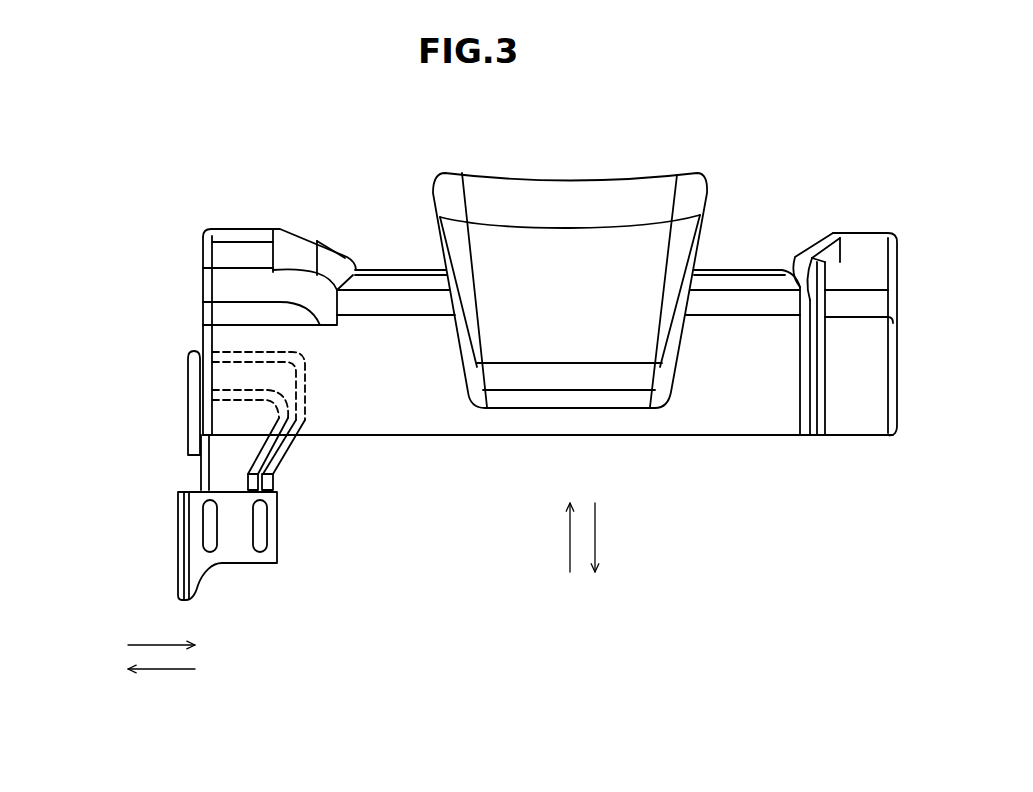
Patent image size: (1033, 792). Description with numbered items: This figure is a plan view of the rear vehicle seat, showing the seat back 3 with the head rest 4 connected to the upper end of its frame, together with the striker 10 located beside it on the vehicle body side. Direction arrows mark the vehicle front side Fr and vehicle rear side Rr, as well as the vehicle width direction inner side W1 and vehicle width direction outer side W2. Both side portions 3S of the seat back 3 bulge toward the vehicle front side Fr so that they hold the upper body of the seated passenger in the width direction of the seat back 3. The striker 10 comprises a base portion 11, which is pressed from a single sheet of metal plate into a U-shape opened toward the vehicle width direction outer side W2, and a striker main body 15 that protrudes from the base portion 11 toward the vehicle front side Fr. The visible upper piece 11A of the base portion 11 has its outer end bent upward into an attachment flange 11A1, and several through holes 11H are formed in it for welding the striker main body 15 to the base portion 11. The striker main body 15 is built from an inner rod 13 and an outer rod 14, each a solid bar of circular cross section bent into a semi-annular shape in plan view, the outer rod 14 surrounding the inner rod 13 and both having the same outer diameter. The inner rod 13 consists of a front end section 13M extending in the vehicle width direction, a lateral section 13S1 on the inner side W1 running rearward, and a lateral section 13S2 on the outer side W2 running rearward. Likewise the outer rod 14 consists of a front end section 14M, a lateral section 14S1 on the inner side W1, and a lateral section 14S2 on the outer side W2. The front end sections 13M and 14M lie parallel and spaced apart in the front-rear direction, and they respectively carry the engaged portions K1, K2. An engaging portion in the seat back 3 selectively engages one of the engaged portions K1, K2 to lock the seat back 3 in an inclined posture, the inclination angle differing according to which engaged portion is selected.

The seat back 3 is at (718, 436).
The side portions 3S is at (247, 229).
The head rest 4 is at (573, 203).
The striker 10 is at (245, 411).
The base portion 11 is at (240, 567).
The upper piece 11A is at (233, 533).
The attachment flange 11A1 is at (178, 553).
The through holes 11H is at (212, 528).
The inner rod 13 is at (245, 420).
The front end section 13M is at (260, 385).
The lateral section 13S1 is at (273, 465).
The lateral section 13S2 is at (203, 460).
The outer rod 14 is at (245, 377).
The front end section 14M is at (248, 350).
The lateral section 14S1 is at (284, 446).
The lateral section 14S2 is at (197, 420).
The striker main body 15 is at (245, 345).
The engaged portion K1 is at (300, 373).
The engaged portion K2 is at (258, 347).
The vehicle front side Fr is at (565, 552).
The vehicle rear side Rr is at (599, 552).
The vehicle width direction inner side W1 is at (145, 644).
The vehicle width direction outer side W2 is at (145, 673).